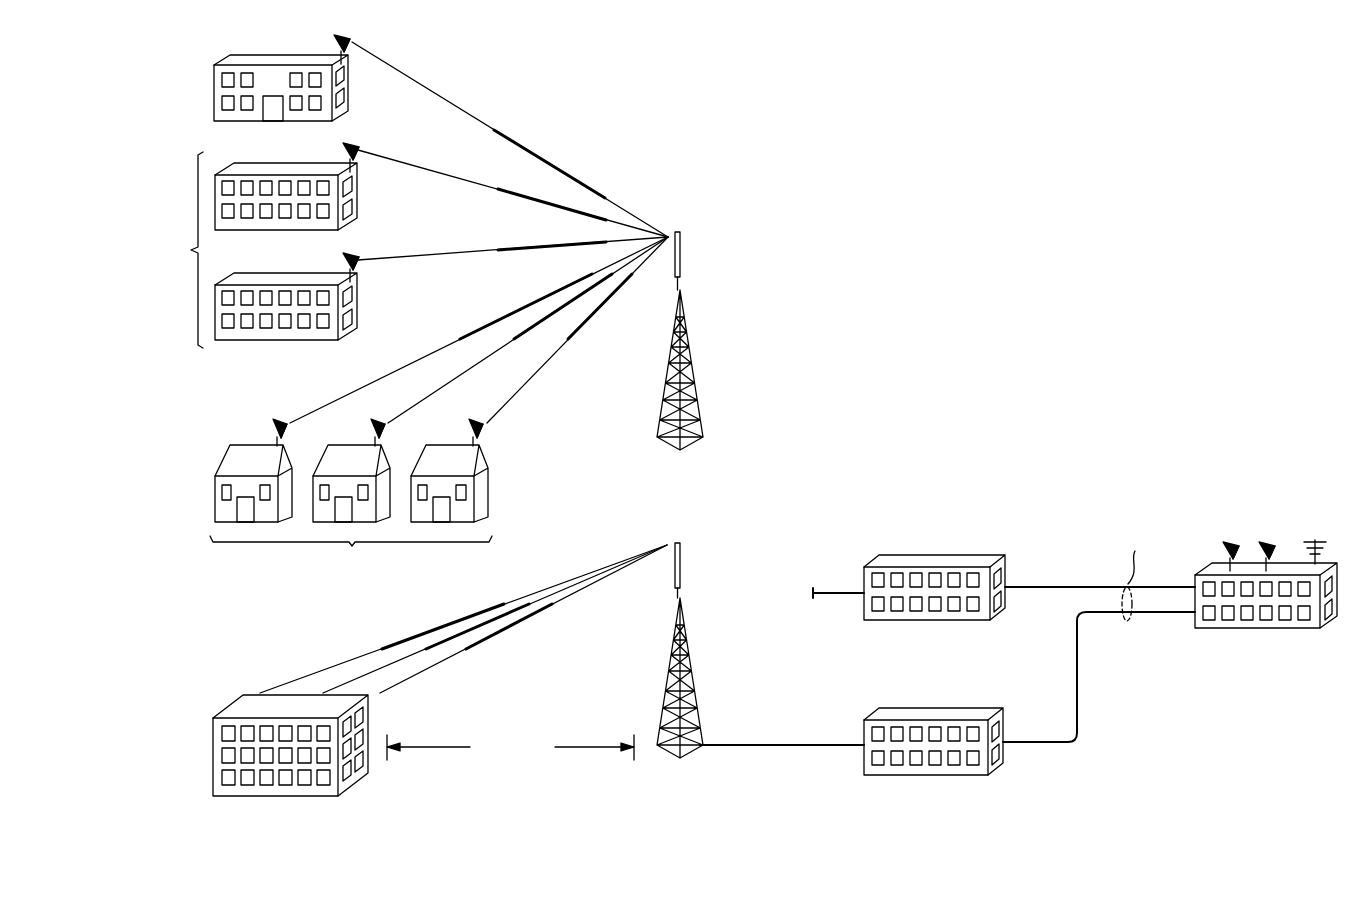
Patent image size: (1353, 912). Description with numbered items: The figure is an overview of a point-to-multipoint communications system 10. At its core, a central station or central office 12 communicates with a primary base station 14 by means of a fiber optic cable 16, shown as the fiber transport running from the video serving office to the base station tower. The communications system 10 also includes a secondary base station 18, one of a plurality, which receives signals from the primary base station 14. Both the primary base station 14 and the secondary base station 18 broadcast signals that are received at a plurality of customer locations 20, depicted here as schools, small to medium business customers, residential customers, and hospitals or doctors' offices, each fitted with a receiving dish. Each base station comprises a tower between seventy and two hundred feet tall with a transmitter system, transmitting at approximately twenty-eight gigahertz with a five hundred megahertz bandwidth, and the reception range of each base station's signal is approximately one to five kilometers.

The point-to-multipoint communications system 10 is at (882, 430).
The central office 12 is at (985, 712).
The primary base station 14 is at (688, 637).
The fiber optic cable 16 is at (793, 745).
The secondary base station 18 is at (686, 327).
The customer locations 20 is at (214, 82).